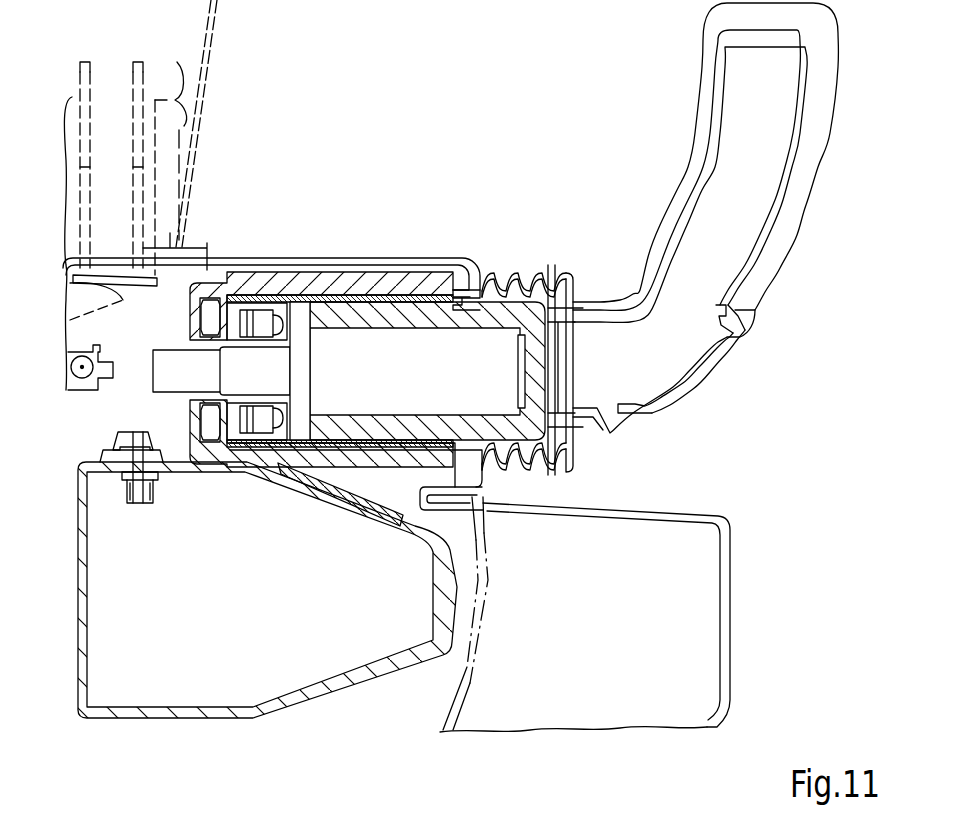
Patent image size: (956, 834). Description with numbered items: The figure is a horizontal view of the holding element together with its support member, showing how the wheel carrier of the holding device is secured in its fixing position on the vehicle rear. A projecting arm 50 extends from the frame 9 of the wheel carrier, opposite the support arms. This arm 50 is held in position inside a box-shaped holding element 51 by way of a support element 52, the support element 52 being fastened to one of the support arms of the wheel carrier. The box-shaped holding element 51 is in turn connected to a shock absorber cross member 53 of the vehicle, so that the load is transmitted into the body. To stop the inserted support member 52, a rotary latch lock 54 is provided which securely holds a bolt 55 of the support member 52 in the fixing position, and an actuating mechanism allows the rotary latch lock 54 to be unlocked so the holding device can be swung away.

The frame 9 is at (560, 240).
The projecting arm 50 is at (780, 237).
The box-shaped holding element 51 is at (352, 290).
The support element 52 is at (483, 313).
The shock absorber cross member 53 is at (412, 525).
The rotary latch lock 54 is at (173, 363).
The bolt 55 is at (300, 375).